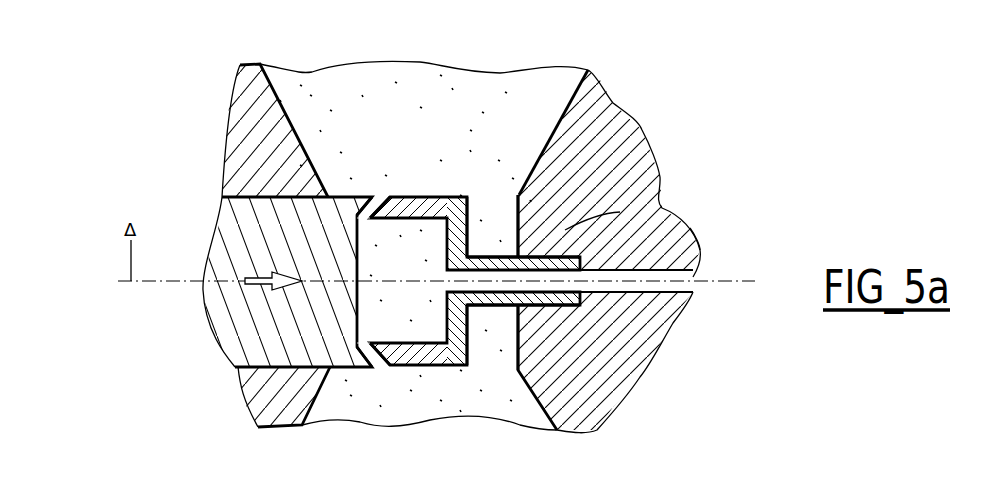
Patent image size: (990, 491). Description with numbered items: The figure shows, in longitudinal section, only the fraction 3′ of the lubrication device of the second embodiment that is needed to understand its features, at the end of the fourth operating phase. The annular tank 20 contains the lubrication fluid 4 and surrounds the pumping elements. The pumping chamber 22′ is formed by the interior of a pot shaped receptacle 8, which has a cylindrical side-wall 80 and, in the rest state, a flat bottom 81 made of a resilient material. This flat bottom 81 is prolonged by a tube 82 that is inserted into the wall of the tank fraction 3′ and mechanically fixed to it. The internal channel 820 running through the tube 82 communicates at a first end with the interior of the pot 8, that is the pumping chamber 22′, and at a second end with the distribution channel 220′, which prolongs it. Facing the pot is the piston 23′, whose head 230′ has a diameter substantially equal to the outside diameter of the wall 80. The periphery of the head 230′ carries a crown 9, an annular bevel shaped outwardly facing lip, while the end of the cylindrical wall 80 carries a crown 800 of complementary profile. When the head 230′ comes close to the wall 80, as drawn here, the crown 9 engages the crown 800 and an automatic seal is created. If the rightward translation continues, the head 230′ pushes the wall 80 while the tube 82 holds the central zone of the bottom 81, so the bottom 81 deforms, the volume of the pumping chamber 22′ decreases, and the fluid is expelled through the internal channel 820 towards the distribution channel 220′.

The annular tank 20 is at (432, 52).
The fraction of the lubrication device 3′ is at (195, 137).
The piston 23′ is at (185, 320).
The head of the piston 230′ is at (237, 337).
The lubrication fluid 4 is at (560, 83).
The pot shaped receptacle 8 is at (469, 181).
The tube 82 is at (620, 212).
The distribution channel 220′ is at (700, 250).
The cylindrical side-wall 80 is at (419, 197).
The crown 800 is at (388, 197).
The crown 9 is at (365, 197).
The flat bottom 81 is at (462, 233).
The internal channel 820 is at (483, 298).
The pumping chamber 22′ is at (403, 323).